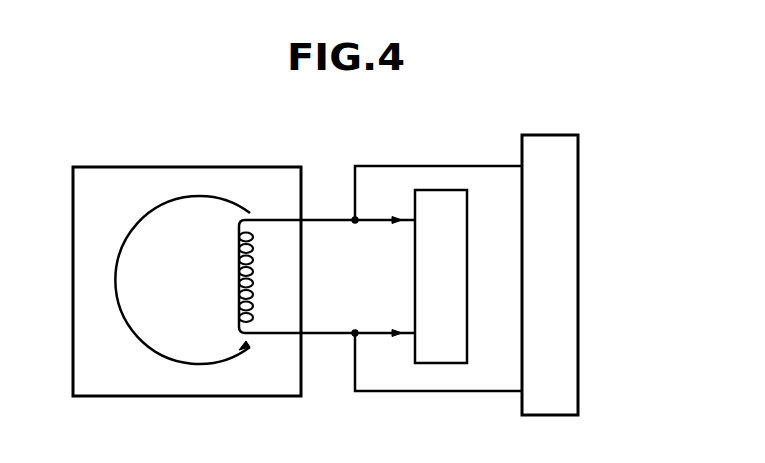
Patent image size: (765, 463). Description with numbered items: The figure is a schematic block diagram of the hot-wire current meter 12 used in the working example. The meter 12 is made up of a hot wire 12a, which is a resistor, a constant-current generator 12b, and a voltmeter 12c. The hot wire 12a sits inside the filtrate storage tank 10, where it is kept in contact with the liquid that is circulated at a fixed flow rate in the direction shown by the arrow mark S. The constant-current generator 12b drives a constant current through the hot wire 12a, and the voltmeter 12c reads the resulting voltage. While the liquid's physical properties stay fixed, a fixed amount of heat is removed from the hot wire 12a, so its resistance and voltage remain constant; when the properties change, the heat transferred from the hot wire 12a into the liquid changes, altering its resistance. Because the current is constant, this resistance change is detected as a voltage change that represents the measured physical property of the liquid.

The filtrate storage tank 10 is at (217, 397).
The arrow mark S is at (150, 350).
The hot-wire current meter 12 is at (468, 155).
The hot wire 12a is at (253, 270).
The constant-current generator 12b is at (432, 190).
The voltmeter 12c is at (580, 382).